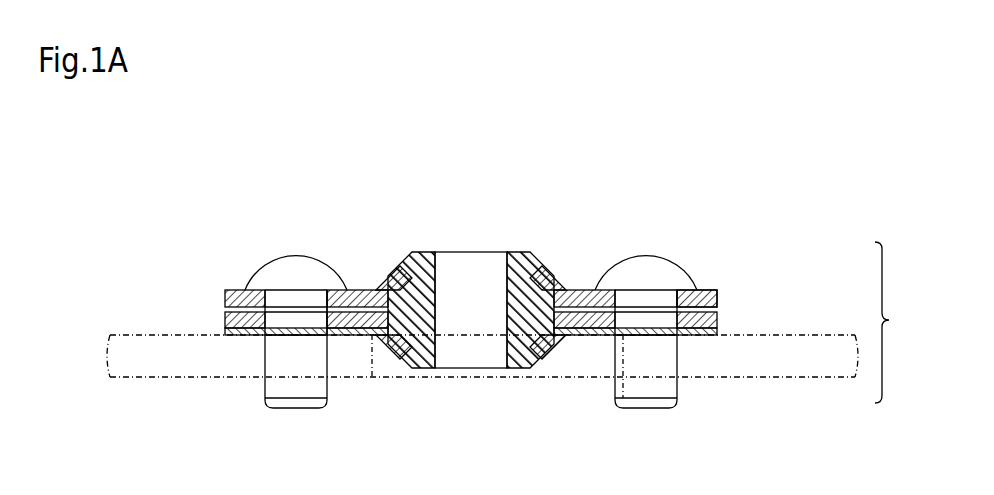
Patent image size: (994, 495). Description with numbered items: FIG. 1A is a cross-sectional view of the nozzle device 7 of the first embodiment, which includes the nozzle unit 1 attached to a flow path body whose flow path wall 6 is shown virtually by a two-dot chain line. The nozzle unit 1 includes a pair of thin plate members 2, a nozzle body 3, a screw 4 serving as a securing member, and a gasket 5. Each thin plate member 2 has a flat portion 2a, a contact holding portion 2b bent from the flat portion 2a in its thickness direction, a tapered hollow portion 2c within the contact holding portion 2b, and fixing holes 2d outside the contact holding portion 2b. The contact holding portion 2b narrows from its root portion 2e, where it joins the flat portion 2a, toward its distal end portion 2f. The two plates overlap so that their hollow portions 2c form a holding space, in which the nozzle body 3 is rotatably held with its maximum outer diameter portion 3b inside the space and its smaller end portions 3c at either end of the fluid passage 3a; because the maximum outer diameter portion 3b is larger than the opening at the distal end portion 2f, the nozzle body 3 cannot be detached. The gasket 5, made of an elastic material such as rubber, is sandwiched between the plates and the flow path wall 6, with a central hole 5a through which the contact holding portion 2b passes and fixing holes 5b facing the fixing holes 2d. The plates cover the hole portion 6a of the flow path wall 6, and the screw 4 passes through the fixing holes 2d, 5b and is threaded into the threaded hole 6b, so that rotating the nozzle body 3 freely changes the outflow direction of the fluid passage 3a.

The nozzle unit 1 is at (471, 189).
The thin plate member 2 is at (225, 295).
The flat portion 2a is at (350, 262).
The contact holding portion 2b is at (372, 262).
The hollow portion 2c is at (397, 262).
The fixing hole 2d is at (698, 258).
The root portion 2e is at (548, 258).
The distal end portion 2f is at (585, 258).
The nozzle body 3 is at (512, 258).
The fluid passage 3a is at (505, 328).
The maximum outer diameter portion 3b is at (378, 340).
The end portion 3c is at (425, 252).
The screw 4 is at (292, 257).
The gasket 5 is at (243, 337).
The central hole 5a is at (372, 340).
The fixing hole 5b is at (627, 338).
The flow path wall 6 is at (210, 362).
The hole portion 6a is at (372, 358).
The threaded hole 6b is at (623, 398).
The nozzle device 7 is at (891, 322).